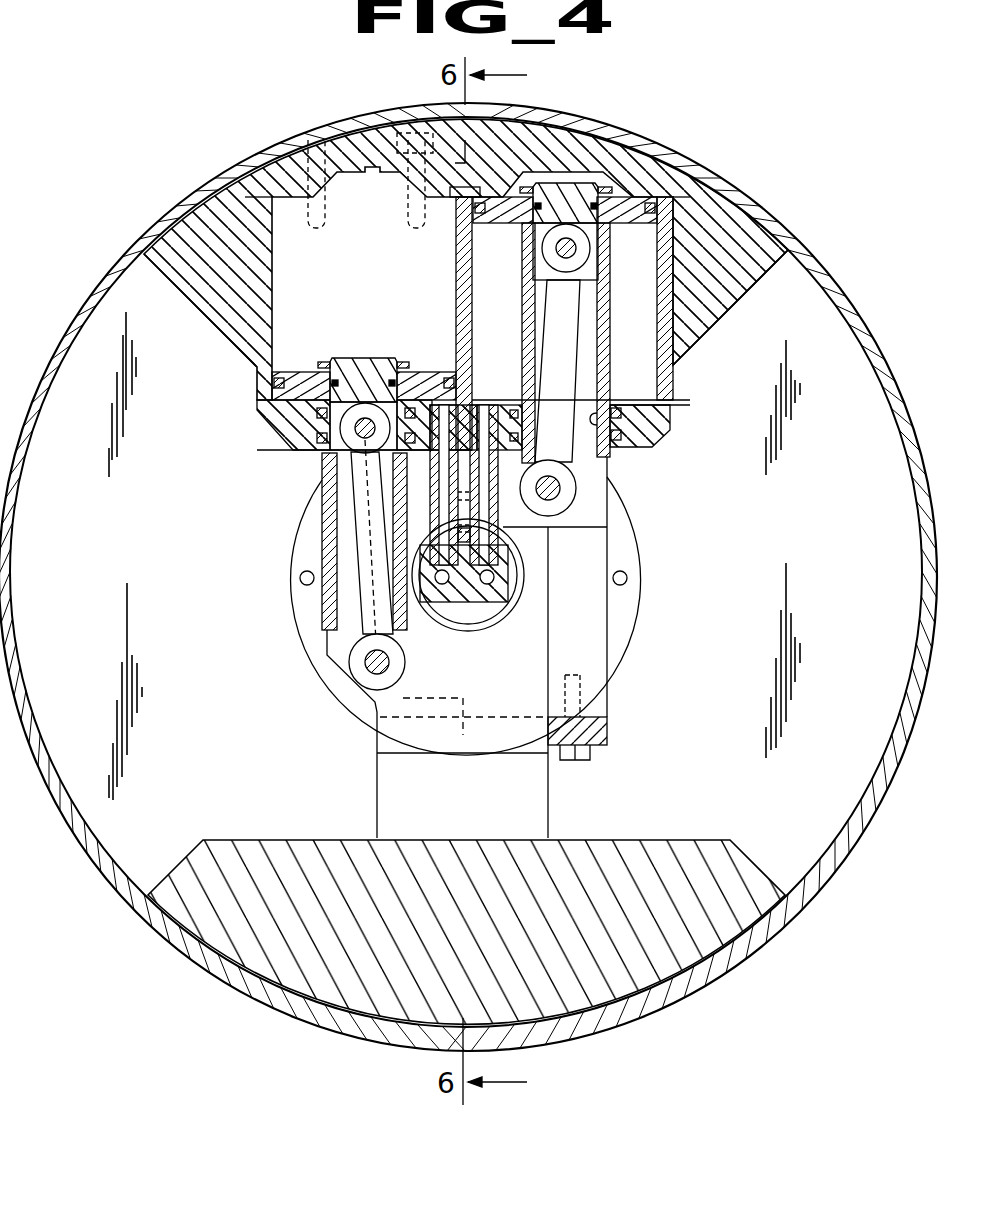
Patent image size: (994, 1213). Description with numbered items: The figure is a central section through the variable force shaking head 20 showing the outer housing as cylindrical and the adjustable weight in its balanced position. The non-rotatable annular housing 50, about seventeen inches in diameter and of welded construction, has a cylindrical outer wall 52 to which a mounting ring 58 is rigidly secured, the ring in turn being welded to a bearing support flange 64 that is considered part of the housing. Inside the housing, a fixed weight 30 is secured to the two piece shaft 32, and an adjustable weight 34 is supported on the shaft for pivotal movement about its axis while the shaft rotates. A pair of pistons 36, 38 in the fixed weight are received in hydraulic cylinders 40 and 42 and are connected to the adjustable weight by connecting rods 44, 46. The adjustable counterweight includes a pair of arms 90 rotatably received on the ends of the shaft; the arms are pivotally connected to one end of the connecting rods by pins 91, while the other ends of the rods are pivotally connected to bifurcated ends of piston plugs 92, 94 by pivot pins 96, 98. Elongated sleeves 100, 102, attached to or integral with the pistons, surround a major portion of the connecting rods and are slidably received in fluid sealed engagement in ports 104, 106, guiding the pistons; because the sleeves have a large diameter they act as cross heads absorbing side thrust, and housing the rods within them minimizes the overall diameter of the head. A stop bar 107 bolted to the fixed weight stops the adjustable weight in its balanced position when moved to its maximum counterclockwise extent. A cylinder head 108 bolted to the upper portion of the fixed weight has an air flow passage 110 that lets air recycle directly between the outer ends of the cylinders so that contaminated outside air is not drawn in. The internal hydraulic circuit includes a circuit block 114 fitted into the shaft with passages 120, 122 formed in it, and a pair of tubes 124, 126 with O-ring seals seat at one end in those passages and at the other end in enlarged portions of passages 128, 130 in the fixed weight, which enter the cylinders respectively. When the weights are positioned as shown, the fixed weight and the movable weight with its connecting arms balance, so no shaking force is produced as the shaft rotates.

The variable force shaking head 20 is at (728, 80).
The fixed weight 30 is at (190, 230).
The two piece shaft 32 is at (474, 618).
The adjustable weight 34 is at (660, 836).
The piston 36 is at (270, 394).
The piston 38 is at (640, 193).
The hydraulic cylinder 40 is at (284, 320).
The hydraulic cylinder 42 is at (658, 360).
The connecting rod 44 is at (354, 493).
The connecting rod 46 is at (594, 458).
The annular housing 50 is at (262, 146).
The cylindrical outer wall 52 is at (713, 170).
The mounting ring 58 is at (832, 511).
The bearing support flange 64 is at (630, 552).
The arm 90 is at (480, 807).
The pin 91 is at (372, 666).
The piston plug 92 is at (341, 357).
The piston plug 94 is at (563, 188).
The pivot pin 96 is at (360, 433).
The pivot pin 98 is at (555, 255).
The elongated sleeve 100 is at (322, 546).
The elongated sleeve 102 is at (604, 346).
The port 104 is at (292, 427).
The port 106 is at (598, 423).
The stop bar 107 is at (596, 722).
The cylinder head 108 is at (357, 142).
The air flow passage 110 is at (452, 200).
The circuit block 114 is at (478, 617).
The passage 120 is at (441, 585).
The passage 122 is at (489, 585).
The tube 124 is at (428, 518).
The tube 126 is at (500, 516).
The passage 128 is at (446, 402).
The passage 130 is at (490, 403).